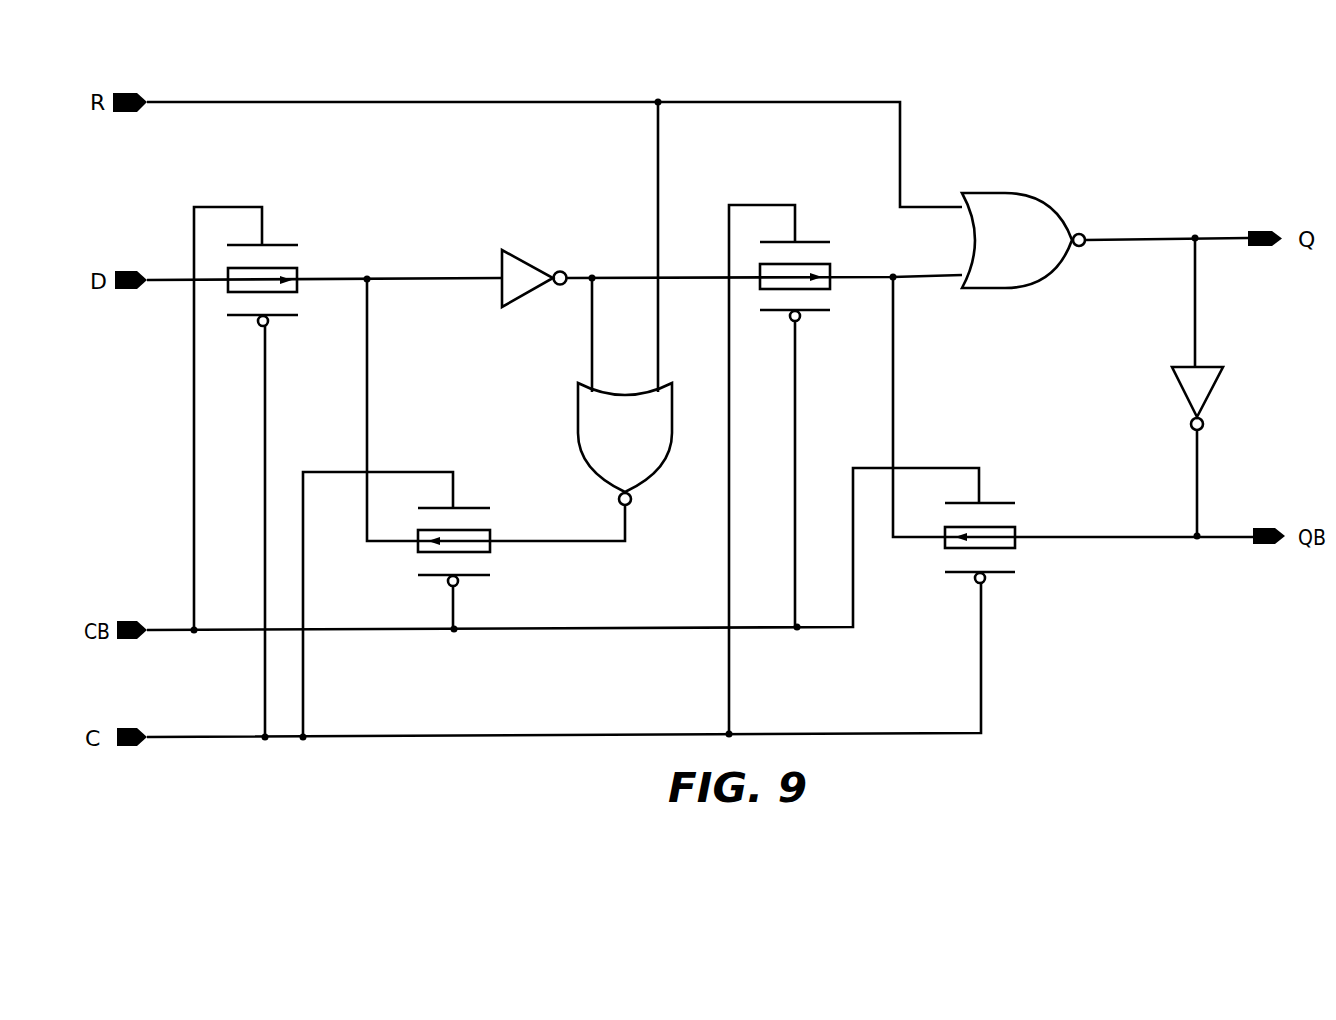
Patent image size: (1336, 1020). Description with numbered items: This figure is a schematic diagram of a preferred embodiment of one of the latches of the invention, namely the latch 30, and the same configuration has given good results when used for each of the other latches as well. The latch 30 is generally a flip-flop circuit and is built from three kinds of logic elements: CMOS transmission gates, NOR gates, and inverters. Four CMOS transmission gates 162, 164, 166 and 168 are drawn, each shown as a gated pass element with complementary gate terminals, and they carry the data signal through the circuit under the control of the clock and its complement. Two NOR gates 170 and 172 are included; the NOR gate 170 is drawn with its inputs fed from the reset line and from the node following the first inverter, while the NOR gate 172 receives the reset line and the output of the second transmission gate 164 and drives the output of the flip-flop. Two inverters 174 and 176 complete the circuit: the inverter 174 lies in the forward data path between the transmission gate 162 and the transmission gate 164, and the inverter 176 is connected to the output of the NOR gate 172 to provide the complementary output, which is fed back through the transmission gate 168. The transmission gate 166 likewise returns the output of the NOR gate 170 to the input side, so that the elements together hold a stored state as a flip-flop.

The latch 30 is at (1138, 96).
The CMOS transmission gate 162 is at (300, 268).
The CMOS transmission gate 164 is at (830, 263).
The CMOS transmission gate 166 is at (488, 528).
The CMOS transmission gate 168 is at (1015, 527).
The NOR gate 170 is at (577, 402).
The NOR gate 172 is at (1008, 193).
The inverter 174 is at (532, 262).
The inverter 176 is at (1213, 392).